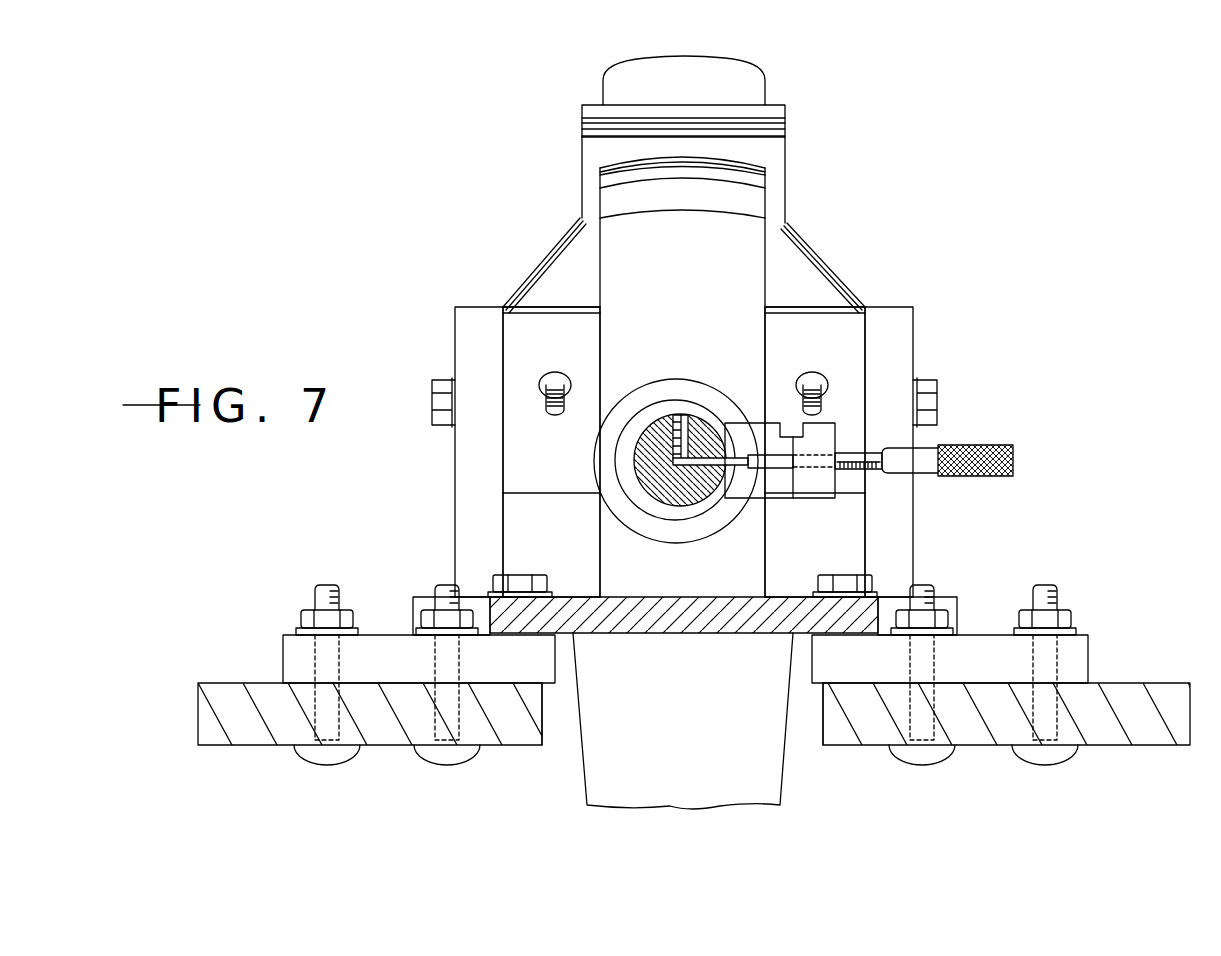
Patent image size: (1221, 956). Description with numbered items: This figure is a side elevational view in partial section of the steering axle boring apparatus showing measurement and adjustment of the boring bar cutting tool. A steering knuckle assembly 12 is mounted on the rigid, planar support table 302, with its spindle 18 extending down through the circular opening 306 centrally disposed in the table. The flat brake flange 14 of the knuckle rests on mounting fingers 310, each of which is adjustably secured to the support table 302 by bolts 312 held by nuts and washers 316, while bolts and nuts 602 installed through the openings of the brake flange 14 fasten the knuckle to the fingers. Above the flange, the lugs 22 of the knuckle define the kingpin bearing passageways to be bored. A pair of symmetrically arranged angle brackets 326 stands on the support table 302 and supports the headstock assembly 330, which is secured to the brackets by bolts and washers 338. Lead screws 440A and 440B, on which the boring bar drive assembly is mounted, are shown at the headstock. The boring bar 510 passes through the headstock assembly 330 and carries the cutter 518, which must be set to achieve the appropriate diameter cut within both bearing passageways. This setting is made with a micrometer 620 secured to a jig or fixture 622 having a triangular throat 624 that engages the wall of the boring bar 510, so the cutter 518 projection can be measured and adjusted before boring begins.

The steering knuckle assembly 12 is at (502, 243).
The brake flange 14 is at (781, 610).
The spindle 18 is at (770, 793).
The lugs 22 is at (712, 252).
The support table 302 is at (1128, 720).
The circular opening 306 is at (548, 733).
The mounting finger 310 is at (300, 663).
The bolt 312 is at (333, 586).
The nuts and washers 316 is at (303, 623).
The angle brackets 326 is at (473, 480).
The headstock assembly 330 is at (970, 332).
The bolts and washers 338 is at (437, 398).
The lead screw 440A is at (552, 380).
The lead screw 440B is at (814, 378).
The boring bar 510 is at (662, 430).
The cutter 518 is at (752, 445).
The bolts and nuts 602 is at (518, 577).
The micrometer 620 is at (918, 462).
The jig or fixture 622 is at (807, 482).
The triangular throat 624 is at (748, 468).